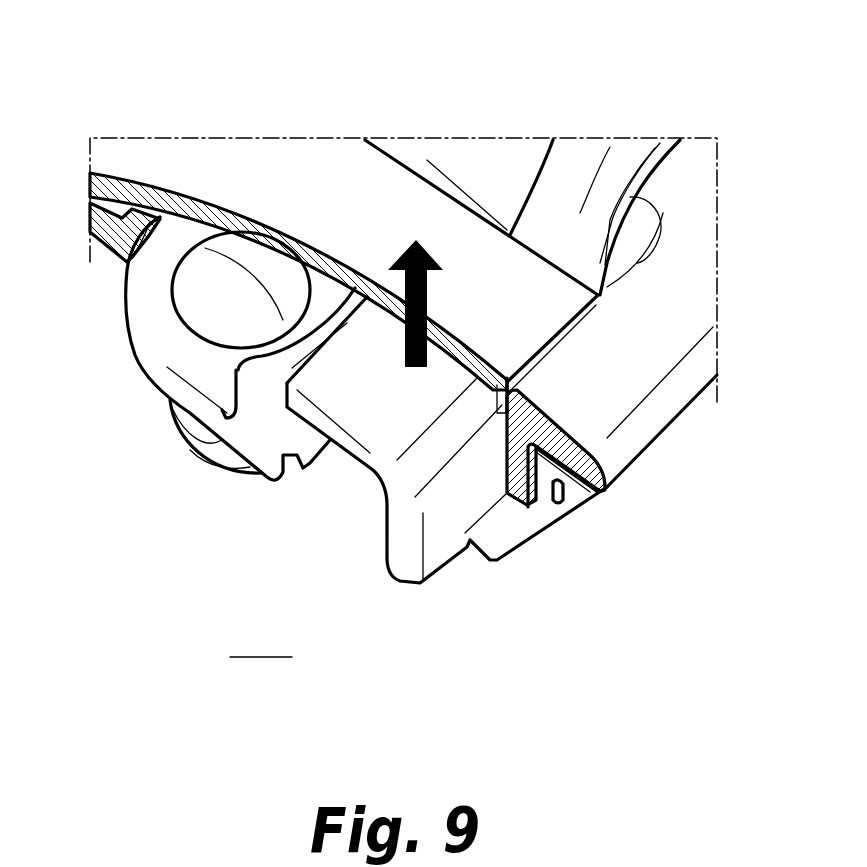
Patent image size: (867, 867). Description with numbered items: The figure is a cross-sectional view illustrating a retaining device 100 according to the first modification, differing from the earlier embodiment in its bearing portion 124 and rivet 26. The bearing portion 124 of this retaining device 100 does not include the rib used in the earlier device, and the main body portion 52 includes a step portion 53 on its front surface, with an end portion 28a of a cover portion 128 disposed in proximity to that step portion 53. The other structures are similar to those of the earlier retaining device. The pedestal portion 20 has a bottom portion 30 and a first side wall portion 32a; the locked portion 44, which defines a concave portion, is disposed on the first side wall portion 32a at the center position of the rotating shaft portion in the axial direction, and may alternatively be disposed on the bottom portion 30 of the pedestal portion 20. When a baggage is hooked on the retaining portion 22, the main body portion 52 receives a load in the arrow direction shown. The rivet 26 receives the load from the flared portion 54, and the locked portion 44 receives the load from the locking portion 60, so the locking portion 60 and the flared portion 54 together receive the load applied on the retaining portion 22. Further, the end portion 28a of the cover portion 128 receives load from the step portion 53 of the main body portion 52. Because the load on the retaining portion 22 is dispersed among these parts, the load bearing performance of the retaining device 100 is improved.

The pedestal portion 20 is at (662, 314).
The retaining portion 22 is at (590, 162).
The rivet 26 is at (212, 258).
The end portion of cover portion 28a is at (493, 398).
The bottom portion 30 is at (113, 240).
The first side wall portion 32a is at (580, 490).
The locked portion 44 is at (522, 460).
The main body portion 52 is at (363, 403).
The step portion 53 is at (420, 458).
The flared portion 54 is at (160, 328).
The locking portion 60 is at (497, 513).
The retaining device 100 is at (261, 643).
The bearing portion 124 is at (248, 424).
The cover portion 128 is at (390, 176).